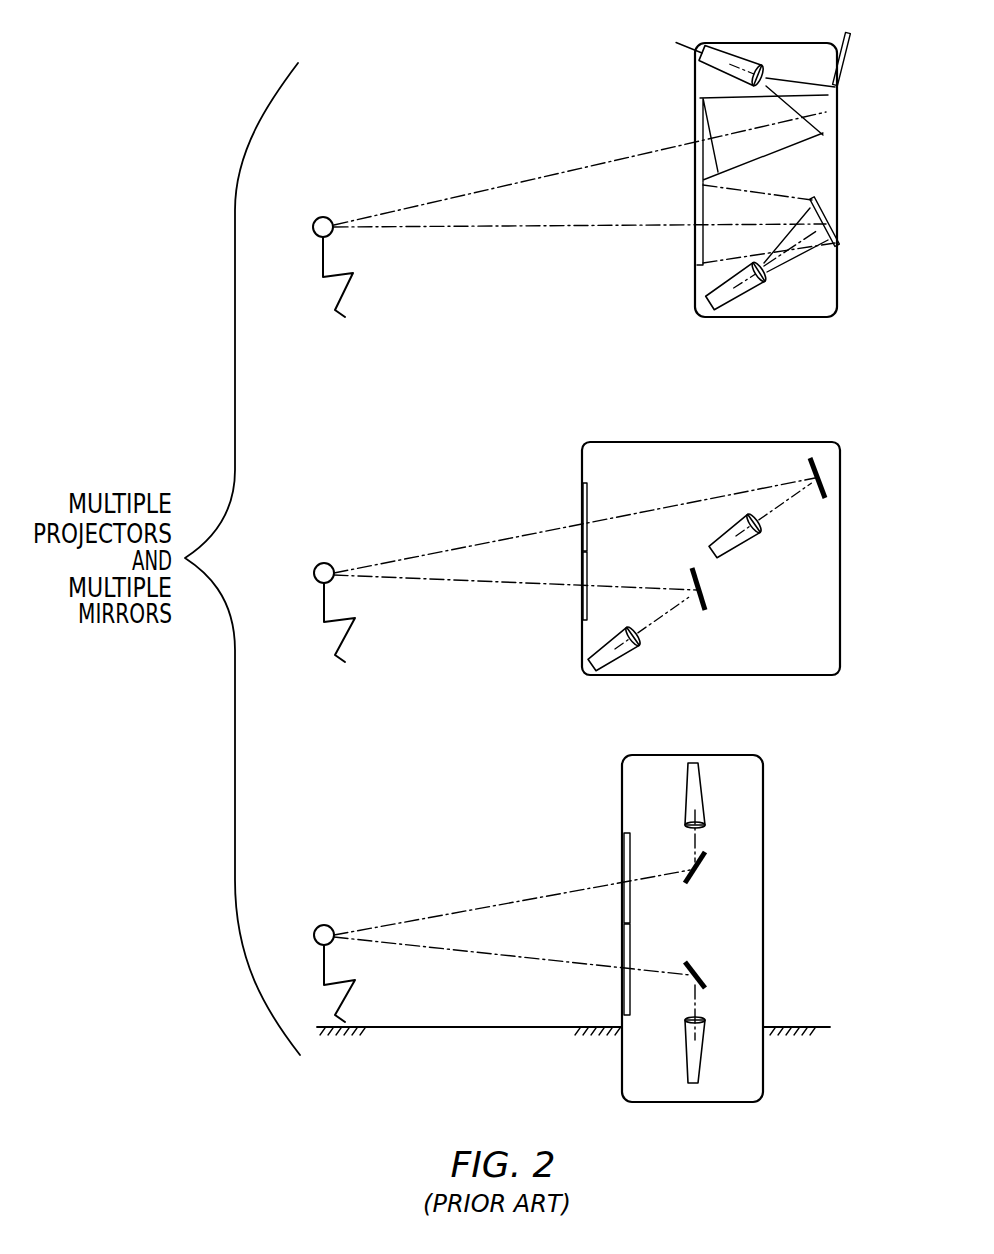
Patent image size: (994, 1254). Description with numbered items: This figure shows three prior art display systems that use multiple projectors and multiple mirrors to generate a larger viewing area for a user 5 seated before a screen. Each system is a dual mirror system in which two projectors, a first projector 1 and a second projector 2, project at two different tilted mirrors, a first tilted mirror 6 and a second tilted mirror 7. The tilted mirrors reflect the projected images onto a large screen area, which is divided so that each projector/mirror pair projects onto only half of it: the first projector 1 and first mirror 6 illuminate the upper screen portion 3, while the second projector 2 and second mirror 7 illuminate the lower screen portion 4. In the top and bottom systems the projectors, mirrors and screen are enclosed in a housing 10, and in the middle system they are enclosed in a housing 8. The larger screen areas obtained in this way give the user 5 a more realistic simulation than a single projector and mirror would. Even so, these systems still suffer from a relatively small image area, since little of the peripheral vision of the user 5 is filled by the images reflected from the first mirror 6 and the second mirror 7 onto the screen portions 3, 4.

The first projector 1 is at (737, 55).
The second projector 2 is at (747, 295).
The upper screen portion 3 is at (695, 118).
The lower screen portion 4 is at (700, 238).
The viewer 5 is at (330, 564).
The first mirror 6 is at (835, 82).
The second mirror 7 is at (837, 247).
The housing 8 is at (750, 442).
The housing 10 is at (805, 43).